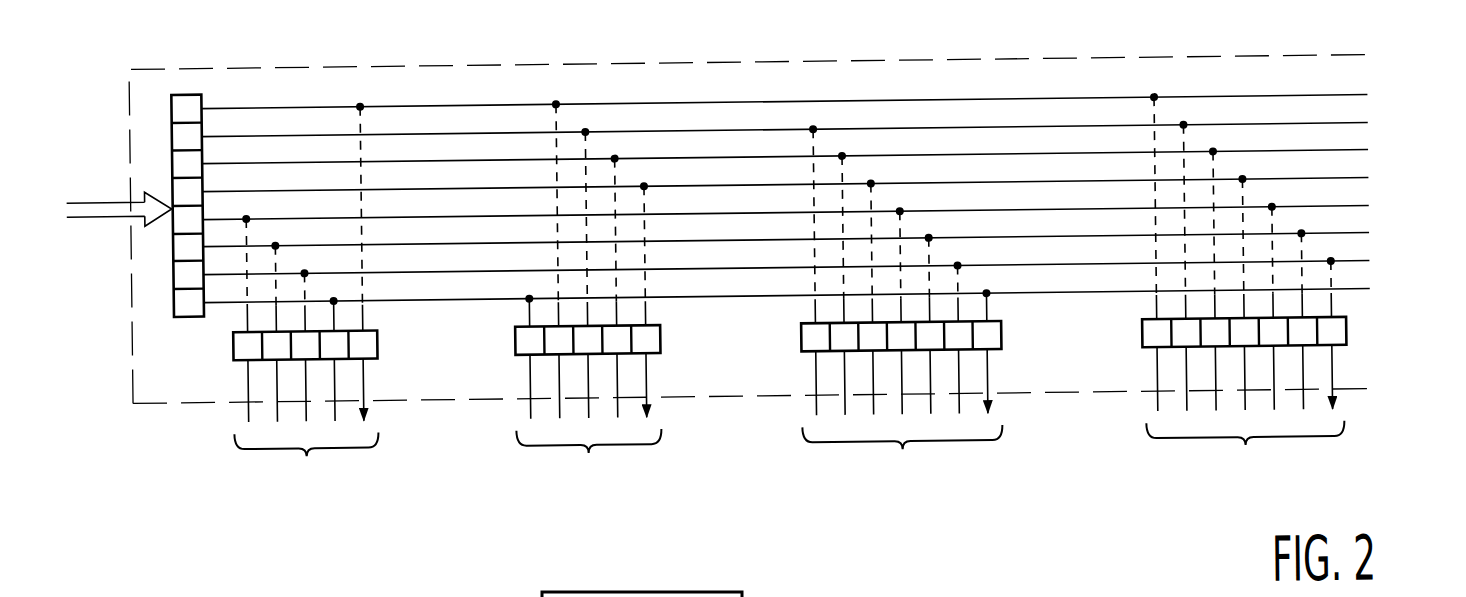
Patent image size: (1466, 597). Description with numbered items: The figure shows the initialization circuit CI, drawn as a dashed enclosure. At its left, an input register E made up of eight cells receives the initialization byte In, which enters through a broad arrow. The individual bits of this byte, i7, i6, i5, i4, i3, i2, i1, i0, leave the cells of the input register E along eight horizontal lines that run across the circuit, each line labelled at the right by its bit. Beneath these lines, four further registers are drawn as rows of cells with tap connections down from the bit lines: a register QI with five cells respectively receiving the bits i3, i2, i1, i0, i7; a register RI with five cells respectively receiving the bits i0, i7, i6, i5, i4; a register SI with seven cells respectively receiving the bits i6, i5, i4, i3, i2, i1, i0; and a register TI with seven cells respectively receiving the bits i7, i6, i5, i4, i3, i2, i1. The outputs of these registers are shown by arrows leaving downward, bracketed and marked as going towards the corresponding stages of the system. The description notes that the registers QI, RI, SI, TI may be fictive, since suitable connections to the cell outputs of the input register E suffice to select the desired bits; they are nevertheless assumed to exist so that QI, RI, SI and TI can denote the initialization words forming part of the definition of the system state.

The initialization circuit CI is at (131, 396).
The initialization byte In is at (119, 193).
The input register E is at (166, 245).
The register QI is at (228, 346).
The register RI is at (510, 335).
The register SI is at (796, 337).
The register TI is at (1137, 336).
The bit i0 is at (1356, 297).
The bit i1 is at (1353, 269).
The bit i2 is at (1348, 241).
The bit i3 is at (1338, 212).
The bit i4 is at (1341, 184).
The bit i5 is at (1334, 156).
The bit i6 is at (1311, 129).
The bit i7 is at (1208, 101).